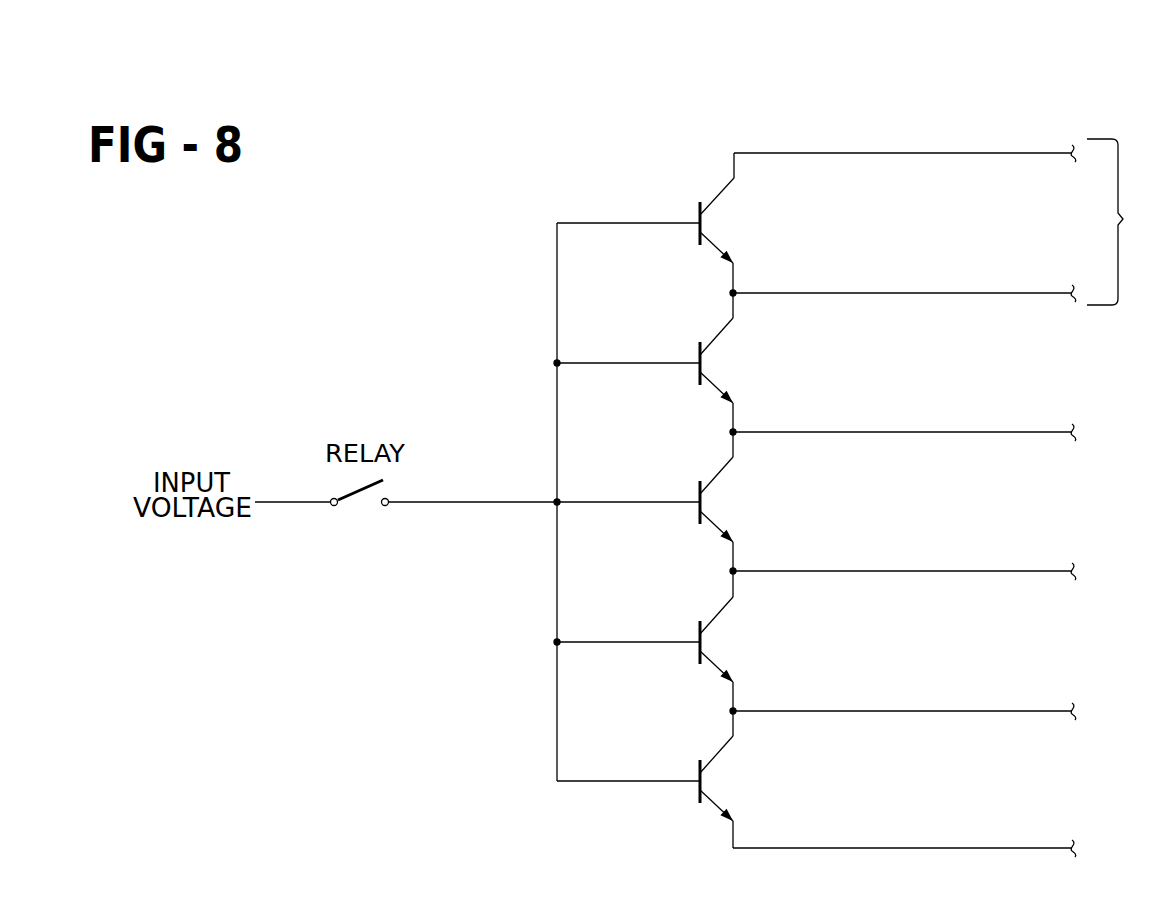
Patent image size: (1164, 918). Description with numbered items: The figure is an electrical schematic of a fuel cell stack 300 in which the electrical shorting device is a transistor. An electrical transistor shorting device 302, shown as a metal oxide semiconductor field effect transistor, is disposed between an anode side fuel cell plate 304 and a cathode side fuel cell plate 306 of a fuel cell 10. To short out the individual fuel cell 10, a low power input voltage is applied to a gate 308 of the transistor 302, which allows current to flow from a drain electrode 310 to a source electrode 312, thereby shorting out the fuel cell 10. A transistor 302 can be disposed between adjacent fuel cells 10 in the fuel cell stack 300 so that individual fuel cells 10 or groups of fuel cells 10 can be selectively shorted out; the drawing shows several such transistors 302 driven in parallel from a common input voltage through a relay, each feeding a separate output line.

The fuel cell stack 300 is at (845, 132).
The electrical transistor shorting device 302 is at (698, 172).
The anode side fuel cell plate 304 is at (1027, 152).
The cathode side fuel cell plate 306 is at (1027, 292).
The gate 308 is at (700, 226).
The drain electrode 310 is at (735, 265).
The source electrode 312 is at (735, 176).
The fuel cell 10 is at (943, 459).